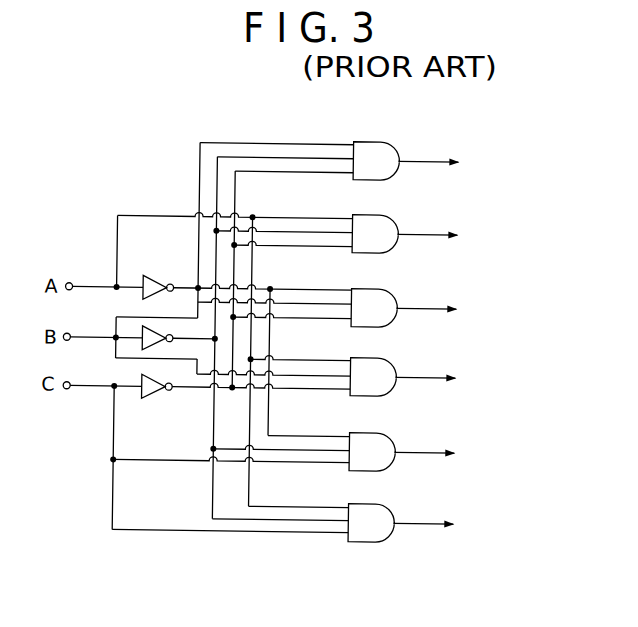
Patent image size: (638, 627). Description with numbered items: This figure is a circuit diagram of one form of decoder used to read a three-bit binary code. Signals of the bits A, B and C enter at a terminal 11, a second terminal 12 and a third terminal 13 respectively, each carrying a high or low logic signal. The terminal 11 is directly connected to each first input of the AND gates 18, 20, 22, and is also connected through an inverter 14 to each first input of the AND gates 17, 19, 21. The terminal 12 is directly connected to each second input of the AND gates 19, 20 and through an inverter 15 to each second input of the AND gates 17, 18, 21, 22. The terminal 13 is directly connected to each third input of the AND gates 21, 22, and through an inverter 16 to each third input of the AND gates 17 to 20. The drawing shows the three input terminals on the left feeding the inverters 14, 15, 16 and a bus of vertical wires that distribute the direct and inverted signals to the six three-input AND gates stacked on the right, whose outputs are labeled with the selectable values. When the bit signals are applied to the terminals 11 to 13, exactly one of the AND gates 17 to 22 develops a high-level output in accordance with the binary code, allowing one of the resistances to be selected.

The terminal 11 is at (70, 286).
The second terminal 12 is at (70, 337).
The third terminal 13 is at (68, 392).
The inverter 14 is at (153, 280).
The inverter 15 is at (146, 350).
The inverter 16 is at (147, 395).
The AND gate 17 is at (372, 148).
The AND gate 18 is at (373, 223).
The AND gate 19 is at (373, 297).
The AND gate 20 is at (376, 366).
The AND gate 21 is at (372, 442).
The AND gate 22 is at (373, 513).